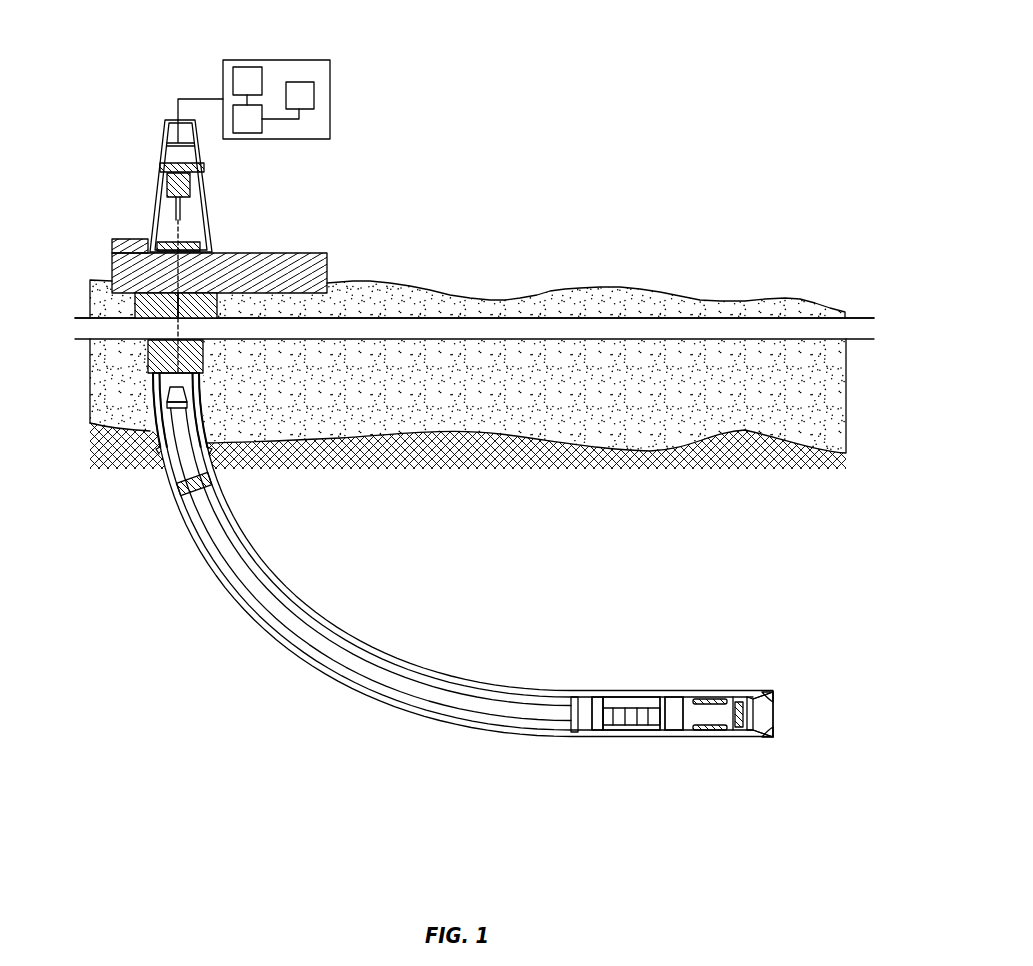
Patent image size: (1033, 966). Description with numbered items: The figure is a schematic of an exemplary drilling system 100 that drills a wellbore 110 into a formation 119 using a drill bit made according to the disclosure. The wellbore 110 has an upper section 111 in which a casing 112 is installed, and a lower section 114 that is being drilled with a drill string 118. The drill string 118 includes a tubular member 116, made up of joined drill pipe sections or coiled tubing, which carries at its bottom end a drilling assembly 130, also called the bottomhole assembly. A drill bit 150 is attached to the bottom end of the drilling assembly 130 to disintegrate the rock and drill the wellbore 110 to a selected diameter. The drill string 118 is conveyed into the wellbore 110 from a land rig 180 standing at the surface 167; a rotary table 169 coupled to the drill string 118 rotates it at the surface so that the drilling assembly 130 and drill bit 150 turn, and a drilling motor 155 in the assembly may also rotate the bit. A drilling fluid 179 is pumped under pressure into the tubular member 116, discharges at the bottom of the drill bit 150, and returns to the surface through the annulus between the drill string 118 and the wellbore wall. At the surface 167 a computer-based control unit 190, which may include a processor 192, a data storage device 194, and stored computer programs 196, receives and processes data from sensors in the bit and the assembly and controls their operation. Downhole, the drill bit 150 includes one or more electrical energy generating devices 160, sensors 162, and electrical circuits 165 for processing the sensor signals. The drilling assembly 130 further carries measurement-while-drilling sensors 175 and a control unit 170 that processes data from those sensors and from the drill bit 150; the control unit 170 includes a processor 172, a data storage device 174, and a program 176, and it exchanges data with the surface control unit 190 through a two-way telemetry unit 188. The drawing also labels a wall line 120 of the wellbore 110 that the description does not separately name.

The drilling system 100 is at (618, 68).
The wellbore 110 is at (192, 552).
The upper section 111 is at (215, 405).
The casing 112 is at (148, 405).
The lower section 114 is at (237, 610).
The tubular member 116 is at (210, 515).
The drill string 118 is at (227, 557).
The formation 119 is at (546, 570).
The borehole inner wall 120 is at (270, 587).
The drilling assembly 130 is at (643, 697).
The drill bit 150 is at (773, 712).
The drilling motor 155 is at (668, 700).
The electrical energy generating device 160 is at (768, 728).
The sensor 162 is at (773, 698).
The electrical circuit 165 is at (742, 720).
The surface 167 is at (90, 318).
The rotary table 169 is at (190, 238).
The control unit 170 is at (597, 708).
The processor 172 is at (610, 718).
The data storage device 174 is at (625, 718).
The downhole sensors 175 is at (680, 707).
The program 176 is at (645, 718).
The drilling fluid 179 is at (130, 238).
The rig 180 is at (149, 195).
The two-way telemetry unit 188 is at (625, 703).
The control unit 190 is at (308, 60).
The processor 192 is at (242, 67).
The data storage device 194 is at (248, 133).
The computer programs 196 is at (315, 93).